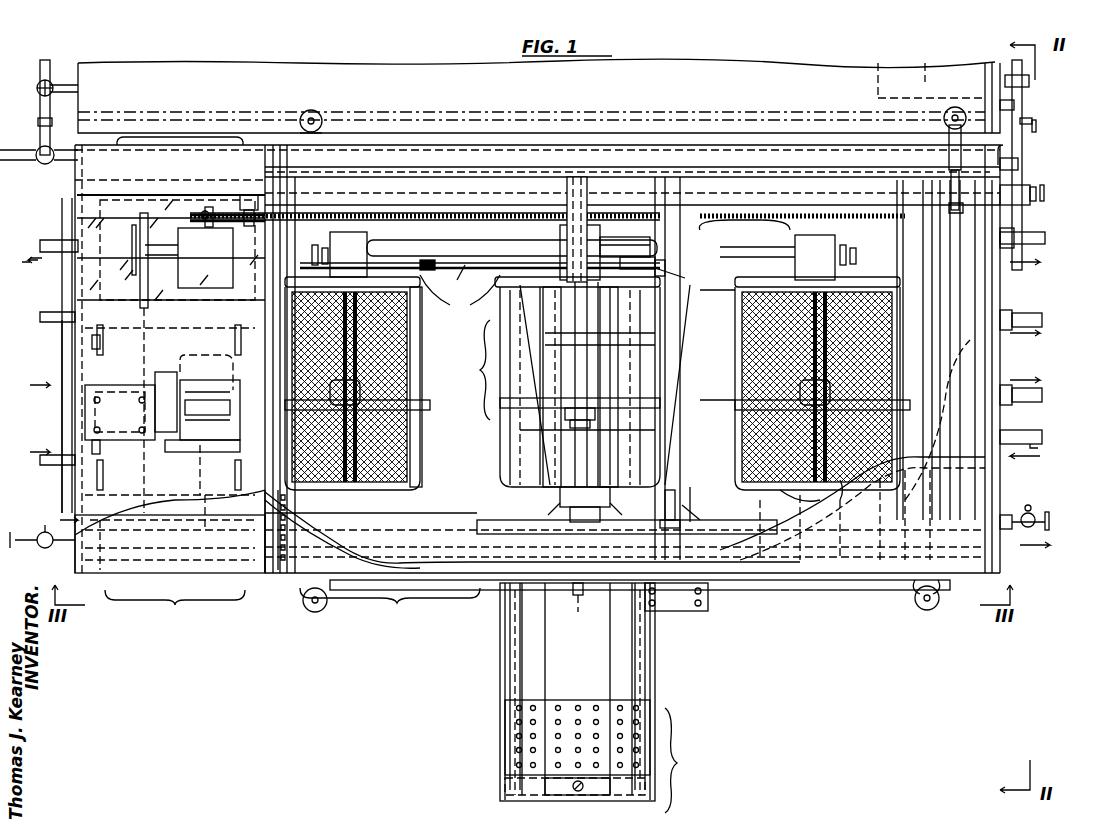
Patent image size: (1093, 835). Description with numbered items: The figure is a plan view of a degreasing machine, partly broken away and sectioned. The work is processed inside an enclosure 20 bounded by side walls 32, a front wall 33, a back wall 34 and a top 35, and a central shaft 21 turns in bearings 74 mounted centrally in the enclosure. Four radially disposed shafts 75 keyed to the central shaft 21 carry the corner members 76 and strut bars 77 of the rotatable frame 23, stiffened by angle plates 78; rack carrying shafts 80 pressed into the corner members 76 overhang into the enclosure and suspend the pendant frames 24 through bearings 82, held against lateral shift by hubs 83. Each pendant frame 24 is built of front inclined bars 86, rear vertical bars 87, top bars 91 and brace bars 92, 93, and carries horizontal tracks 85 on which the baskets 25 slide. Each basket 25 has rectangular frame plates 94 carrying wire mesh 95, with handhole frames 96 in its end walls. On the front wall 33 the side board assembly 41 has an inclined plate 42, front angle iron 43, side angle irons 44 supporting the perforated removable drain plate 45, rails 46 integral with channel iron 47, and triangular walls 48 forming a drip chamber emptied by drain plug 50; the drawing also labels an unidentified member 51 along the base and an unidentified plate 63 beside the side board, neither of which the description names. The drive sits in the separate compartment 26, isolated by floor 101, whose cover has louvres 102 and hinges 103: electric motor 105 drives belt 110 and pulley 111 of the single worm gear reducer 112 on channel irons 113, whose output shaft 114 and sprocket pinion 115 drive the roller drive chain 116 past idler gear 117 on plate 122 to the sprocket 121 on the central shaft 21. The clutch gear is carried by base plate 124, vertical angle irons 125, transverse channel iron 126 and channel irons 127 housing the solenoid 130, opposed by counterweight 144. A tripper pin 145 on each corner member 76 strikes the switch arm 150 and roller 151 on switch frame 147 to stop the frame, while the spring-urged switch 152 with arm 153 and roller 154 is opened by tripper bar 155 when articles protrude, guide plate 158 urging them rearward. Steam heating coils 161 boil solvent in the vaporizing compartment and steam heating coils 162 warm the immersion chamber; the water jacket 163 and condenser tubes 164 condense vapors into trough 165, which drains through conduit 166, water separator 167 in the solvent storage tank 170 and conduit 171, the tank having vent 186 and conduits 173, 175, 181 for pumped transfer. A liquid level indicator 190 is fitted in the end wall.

The enclosure 20 is at (390, 602).
The central shaft 21 is at (555, 503).
The rotatable frame 23 is at (747, 229).
The pendant frames 24 is at (557, 387).
The baskets 25 is at (355, 480).
The separate compartment 26 is at (175, 604).
The side walls 32 is at (72, 428).
The front wall 33 is at (532, 530).
The back wall 34 is at (627, 158).
The top 35 is at (299, 359).
The side board assembly 41 is at (605, 756).
The inclined plate 42 is at (577, 692).
The front angle iron 43 is at (525, 787).
The side angle irons 44 is at (510, 686).
The perforated removable drain plate 45 is at (575, 708).
The rails 46 is at (609, 660).
The channel iron 47 is at (590, 788).
The triangular walls 48 is at (505, 642).
The drain plug 50 is at (572, 602).
The bottom rail 51 is at (810, 590).
The mounting plate 63 is at (682, 604).
The bearings 74 is at (612, 157).
The radially disposed shafts 75 is at (447, 279).
The corner members 76 is at (330, 238).
The strut bars 77 is at (478, 272).
The angle plates 78 is at (535, 385).
The rack carrying shafts 80 is at (657, 420).
The bearings 82 is at (545, 398).
The hubs 83 is at (567, 425).
The horizontal tracks 85 is at (545, 458).
The front inclined bars 86 is at (500, 458).
The rear vertical bars 87 is at (460, 295).
The top bars 91 is at (655, 345).
The brace bars 92 is at (418, 408).
The brace bars 93 is at (422, 330).
The rectangular frame plates 94 is at (793, 387).
The wire mesh 95 is at (690, 385).
The handhole frames 96 is at (343, 500).
The floor 101 is at (213, 504).
The louvres 102 is at (180, 133).
The hinges 103 is at (265, 556).
The electric motor 105 is at (205, 372).
The drive belt 110 is at (170, 410).
The pulley 111 is at (140, 228).
The single worm gear reducer 112 is at (198, 274).
The channel irons 113 is at (118, 236).
The output shaft 114 is at (200, 188).
The sprocket pinion 115 is at (189, 258).
The roller drive chain 116 is at (402, 213).
The idler gear 117 is at (205, 200).
The sprocket 121 is at (588, 200).
The plate 122 is at (248, 197).
The base plate 124 is at (172, 499).
The vertical angle irons 125 is at (92, 372).
The transverse channel iron 126 is at (85, 412).
The channel irons 127 is at (203, 470).
The solenoid 130 is at (197, 404).
The counterweight 144 is at (396, 355).
The tripper pin 145 is at (312, 258).
The switch frame 147 is at (625, 239).
The switch arm 150 is at (560, 253).
The roller 151 is at (671, 268).
The spring-urged switch 152 is at (845, 516).
The arm 153 is at (714, 500).
The roller 154 is at (698, 496).
The tripper bar 155 is at (665, 503).
The guide plate 158 is at (820, 492).
The steam heating coils 161 is at (62, 300).
The steam heating coils 162 is at (1000, 416).
The water jacket 163 is at (758, 157).
The condenser tubes 164 is at (170, 544).
The trough 165 is at (137, 527).
The conduit 166 is at (1030, 199).
The water separator 167 is at (930, 59).
The solvent storage tank 170 is at (539, 96).
The conduit 171 is at (1018, 153).
The conduit 173 is at (70, 87).
The conduit 175 is at (752, 112).
The conduit 181 is at (1028, 232).
The vent 186 is at (948, 160).
The liquid level indicator 190 is at (1027, 517).